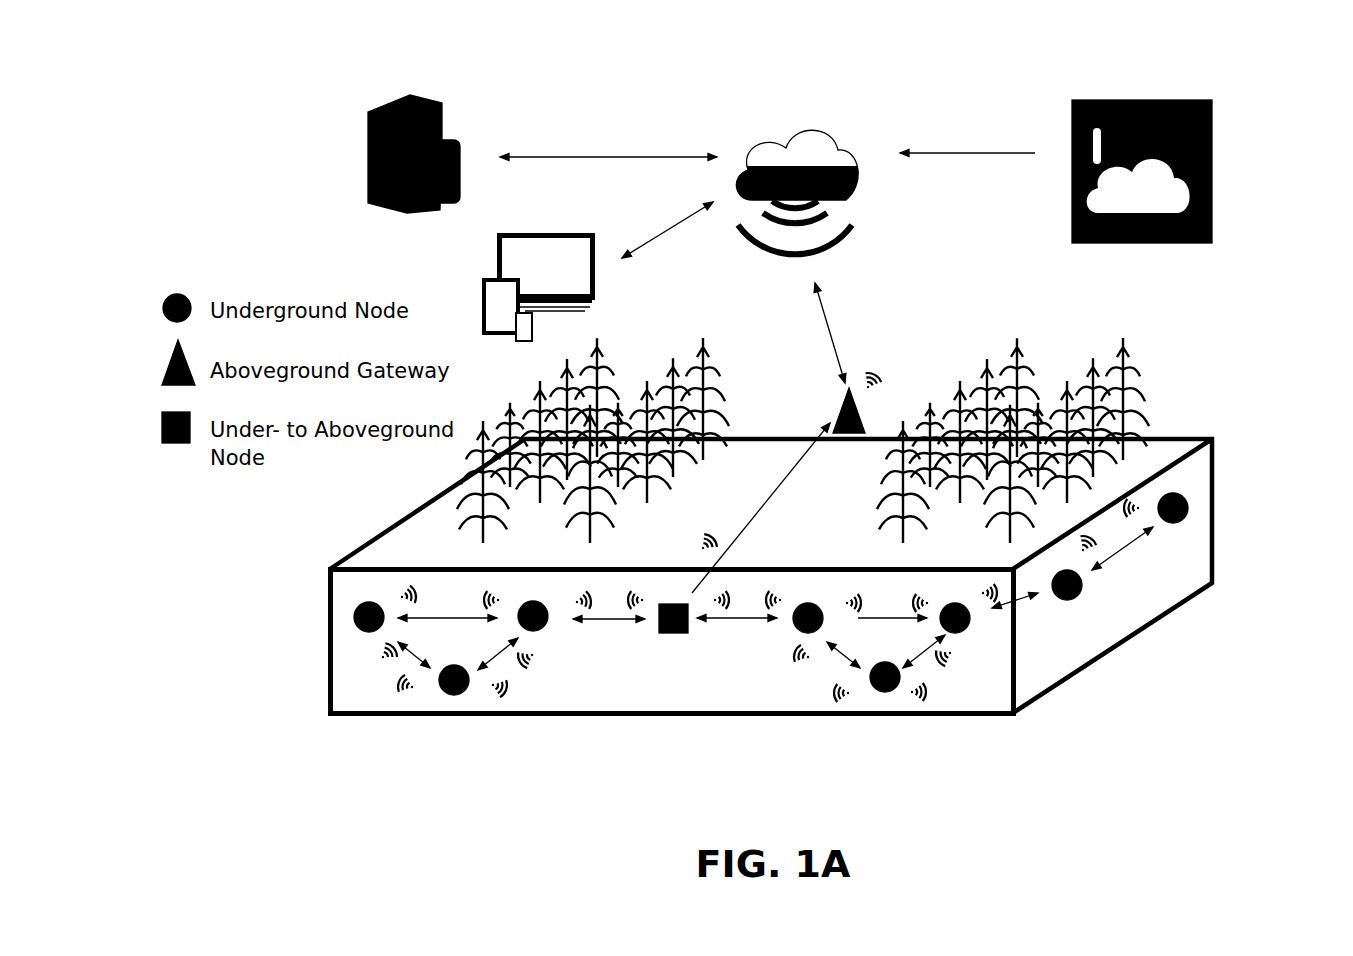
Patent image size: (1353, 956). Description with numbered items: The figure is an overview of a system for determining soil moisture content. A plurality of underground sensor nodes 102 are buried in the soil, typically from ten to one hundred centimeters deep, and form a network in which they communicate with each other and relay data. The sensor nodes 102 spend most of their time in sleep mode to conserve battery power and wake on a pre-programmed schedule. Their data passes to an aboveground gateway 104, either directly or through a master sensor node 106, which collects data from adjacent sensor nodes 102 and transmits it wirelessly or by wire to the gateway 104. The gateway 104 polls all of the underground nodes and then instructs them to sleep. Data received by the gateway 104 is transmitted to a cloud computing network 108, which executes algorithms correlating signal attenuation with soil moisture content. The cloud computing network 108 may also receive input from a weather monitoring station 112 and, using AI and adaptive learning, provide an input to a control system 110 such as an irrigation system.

The underground sensor node 102 is at (440, 688).
The aboveground gateway 104 is at (853, 405).
The master sensor node 106 is at (665, 632).
The cloud computing network 108 is at (805, 160).
The control system 110 is at (366, 181).
The weather monitoring station 112 is at (1215, 212).